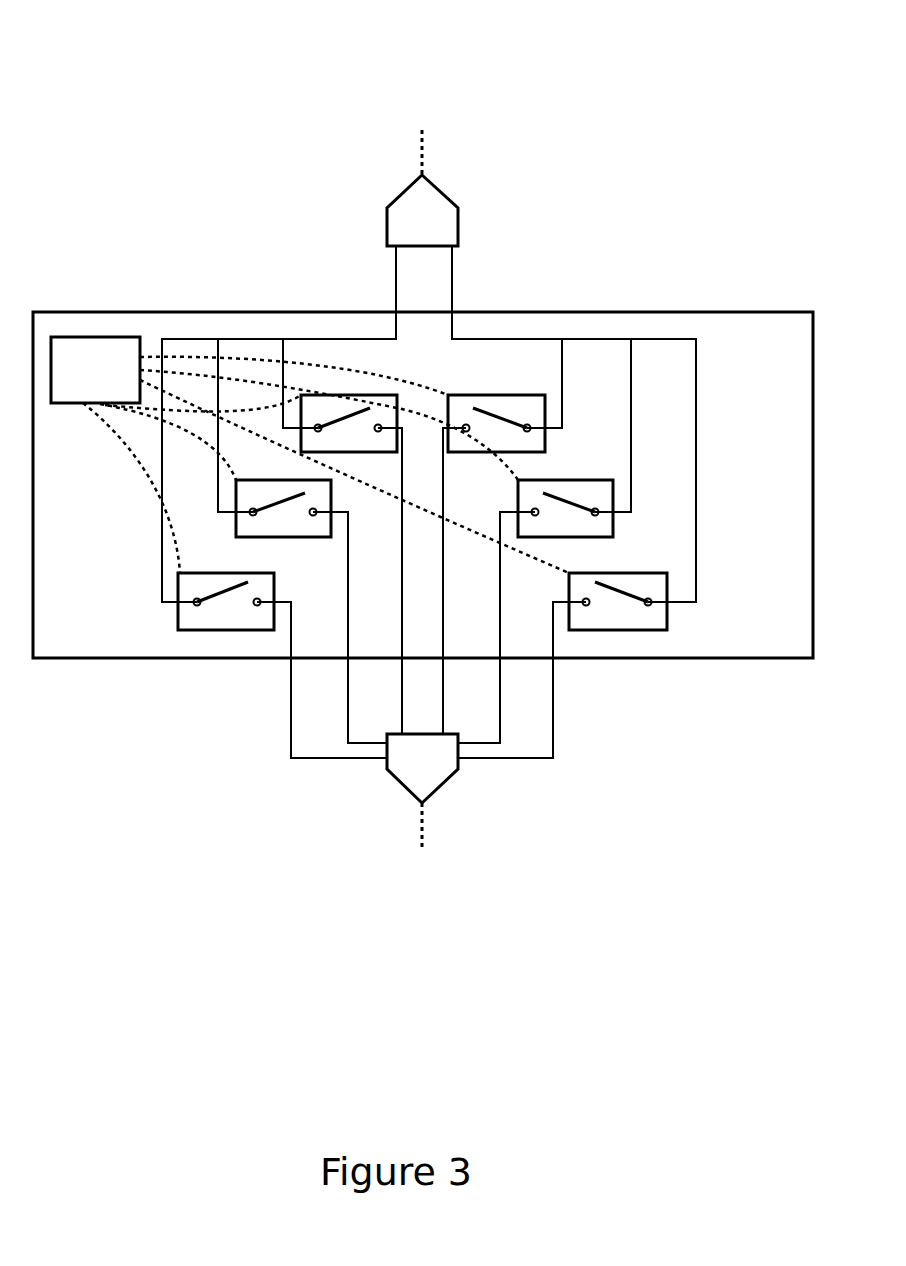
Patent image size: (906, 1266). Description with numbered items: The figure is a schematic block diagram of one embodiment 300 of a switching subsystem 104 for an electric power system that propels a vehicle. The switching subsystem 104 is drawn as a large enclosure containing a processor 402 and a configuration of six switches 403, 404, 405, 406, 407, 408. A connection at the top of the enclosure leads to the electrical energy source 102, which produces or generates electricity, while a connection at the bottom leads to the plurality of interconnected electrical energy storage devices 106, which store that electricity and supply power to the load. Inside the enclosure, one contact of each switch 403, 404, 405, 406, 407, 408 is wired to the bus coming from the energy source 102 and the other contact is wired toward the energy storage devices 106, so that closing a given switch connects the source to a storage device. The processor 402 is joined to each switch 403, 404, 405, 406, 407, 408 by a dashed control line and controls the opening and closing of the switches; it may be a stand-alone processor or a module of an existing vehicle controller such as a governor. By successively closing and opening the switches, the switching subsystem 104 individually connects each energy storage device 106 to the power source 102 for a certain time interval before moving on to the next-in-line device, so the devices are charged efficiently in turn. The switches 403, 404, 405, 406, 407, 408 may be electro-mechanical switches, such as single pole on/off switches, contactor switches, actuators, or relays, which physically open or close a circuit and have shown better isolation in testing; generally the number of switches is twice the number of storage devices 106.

The embodiment of switching subsystem 300 is at (108, 69).
The electrical energy source 102 is at (422, 188).
The electrical energy storage devices 106 is at (422, 791).
The switching subsystem 104 is at (788, 342).
The processor 402 is at (112, 382).
The switch 403 is at (338, 420).
The switch 404 is at (540, 420).
The switch 405 is at (273, 506).
The switch 406 is at (608, 506).
The switch 407 is at (216, 596).
The switch 408 is at (660, 596).